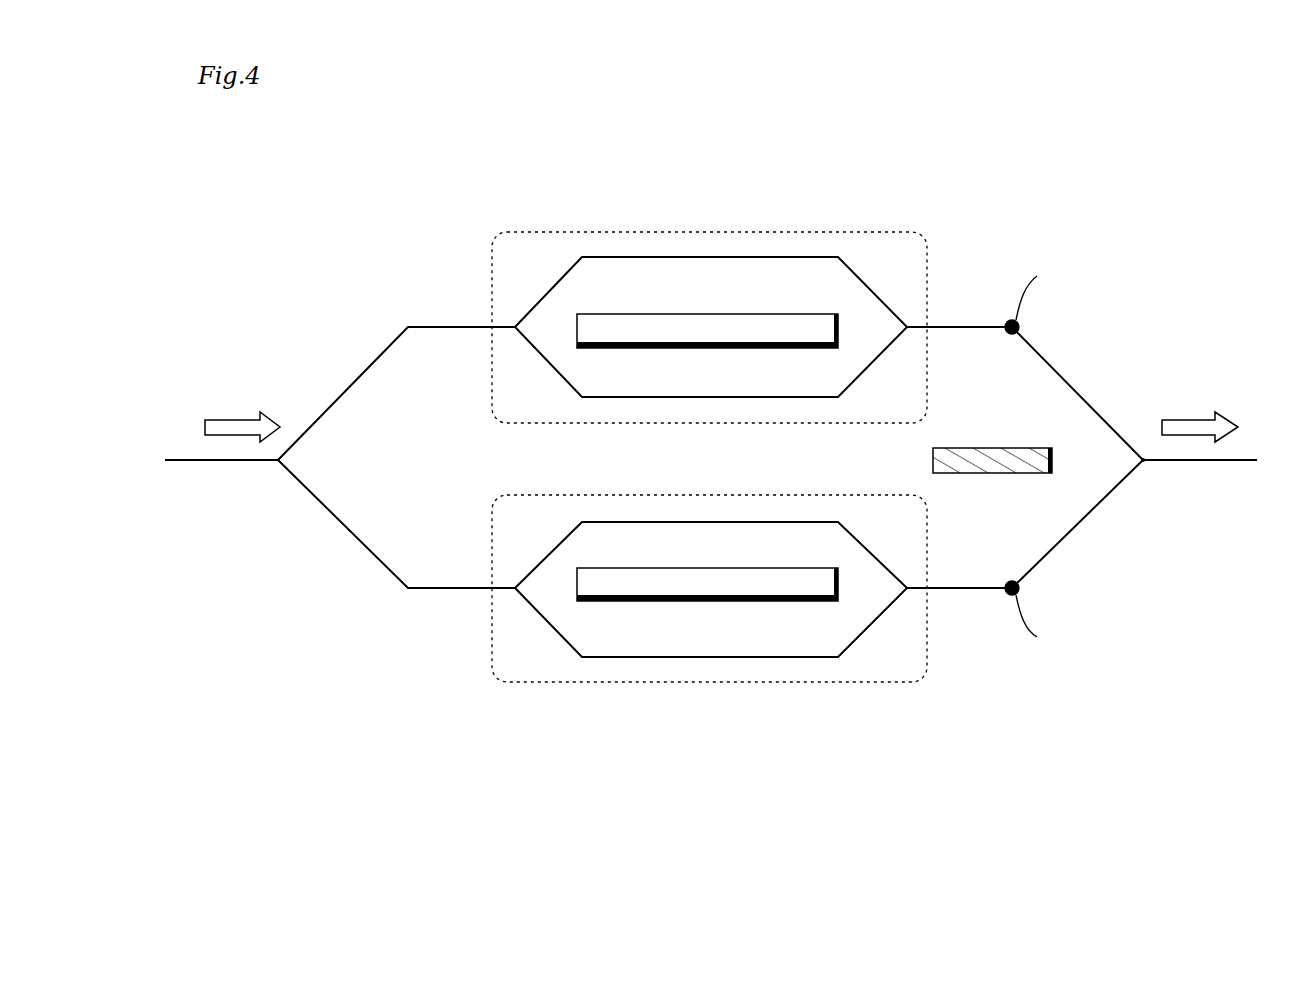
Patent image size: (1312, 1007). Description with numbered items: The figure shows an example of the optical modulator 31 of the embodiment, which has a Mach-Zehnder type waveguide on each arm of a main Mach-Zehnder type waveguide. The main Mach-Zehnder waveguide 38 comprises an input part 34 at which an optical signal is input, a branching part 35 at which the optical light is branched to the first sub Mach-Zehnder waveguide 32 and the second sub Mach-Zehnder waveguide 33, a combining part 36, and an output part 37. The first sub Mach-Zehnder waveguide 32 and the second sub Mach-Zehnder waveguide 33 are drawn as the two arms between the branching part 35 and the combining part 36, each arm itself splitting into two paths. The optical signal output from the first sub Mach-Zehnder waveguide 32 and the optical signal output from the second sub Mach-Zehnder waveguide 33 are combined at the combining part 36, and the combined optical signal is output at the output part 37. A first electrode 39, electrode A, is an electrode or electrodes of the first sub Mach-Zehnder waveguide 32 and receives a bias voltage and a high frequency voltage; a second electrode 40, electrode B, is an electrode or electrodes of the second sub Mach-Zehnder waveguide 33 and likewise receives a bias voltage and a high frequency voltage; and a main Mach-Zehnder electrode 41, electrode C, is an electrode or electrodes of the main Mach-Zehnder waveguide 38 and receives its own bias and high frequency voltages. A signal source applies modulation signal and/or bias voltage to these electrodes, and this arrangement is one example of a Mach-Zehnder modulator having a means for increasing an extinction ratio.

The optical modulator 31 is at (931, 210).
The first sub Mach-Zehnder waveguide 32 is at (518, 226).
The second sub Mach-Zehnder waveguide 33 is at (520, 683).
The input part 34 is at (203, 461).
The branching part 35 is at (276, 461).
The combining part 36 is at (1145, 462).
The output part 37 is at (1243, 462).
The main Mach-Zehnder waveguide 38 is at (1078, 385).
The first electrode 39 is at (792, 314).
The second electrode 40 is at (785, 602).
The main Mach-Zehnder electrode 41 is at (962, 448).